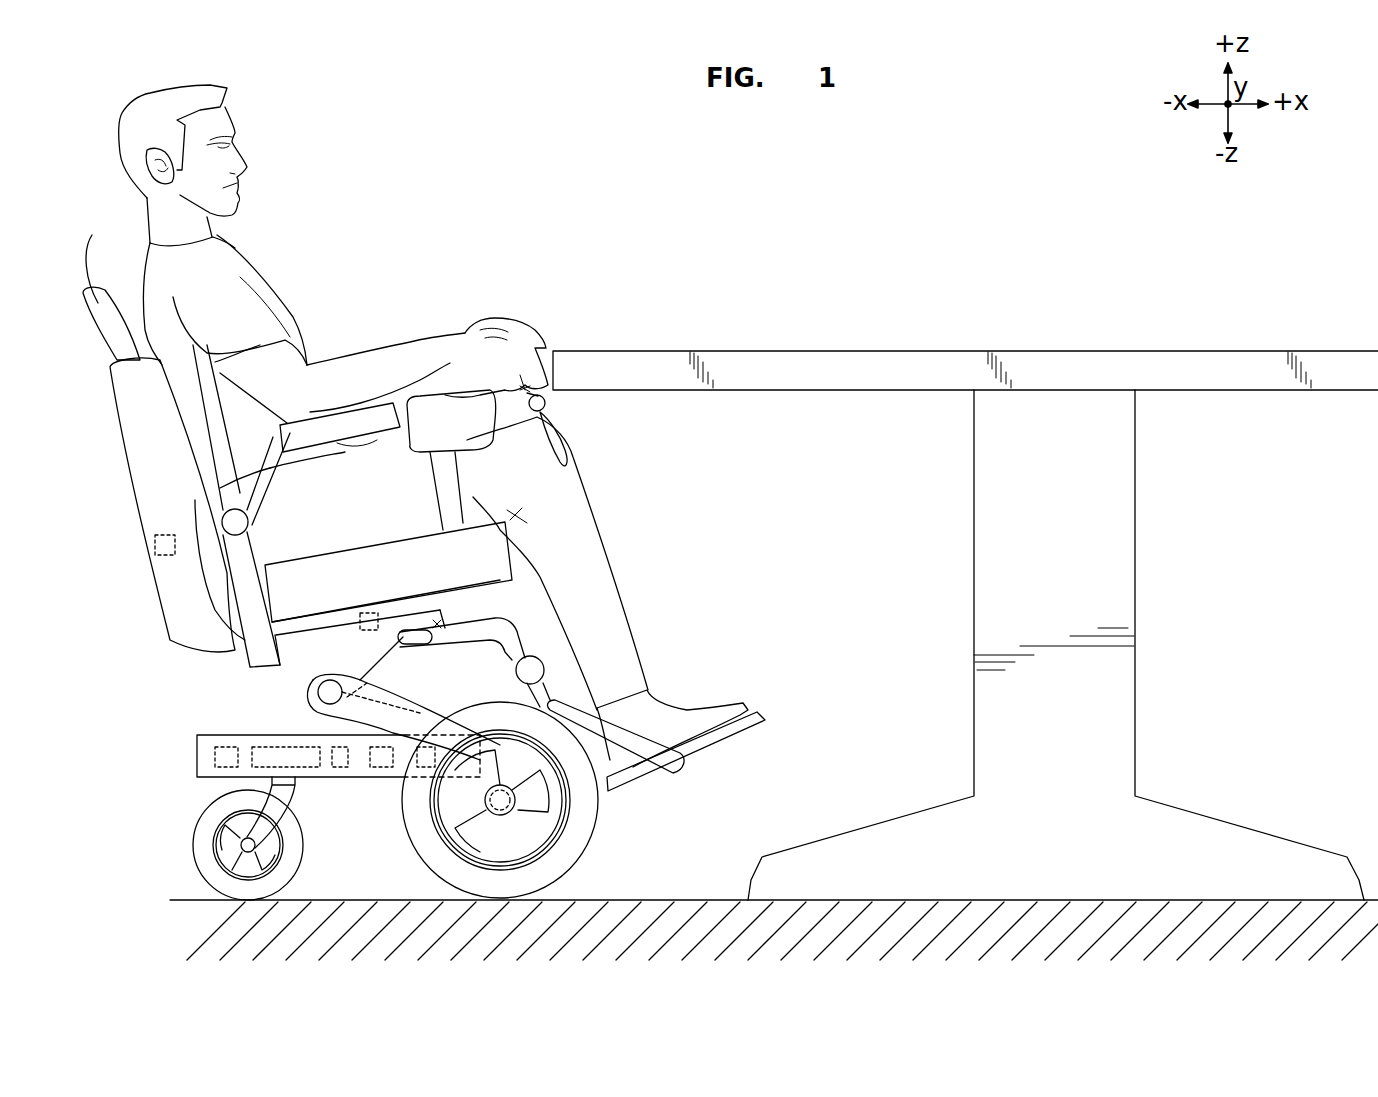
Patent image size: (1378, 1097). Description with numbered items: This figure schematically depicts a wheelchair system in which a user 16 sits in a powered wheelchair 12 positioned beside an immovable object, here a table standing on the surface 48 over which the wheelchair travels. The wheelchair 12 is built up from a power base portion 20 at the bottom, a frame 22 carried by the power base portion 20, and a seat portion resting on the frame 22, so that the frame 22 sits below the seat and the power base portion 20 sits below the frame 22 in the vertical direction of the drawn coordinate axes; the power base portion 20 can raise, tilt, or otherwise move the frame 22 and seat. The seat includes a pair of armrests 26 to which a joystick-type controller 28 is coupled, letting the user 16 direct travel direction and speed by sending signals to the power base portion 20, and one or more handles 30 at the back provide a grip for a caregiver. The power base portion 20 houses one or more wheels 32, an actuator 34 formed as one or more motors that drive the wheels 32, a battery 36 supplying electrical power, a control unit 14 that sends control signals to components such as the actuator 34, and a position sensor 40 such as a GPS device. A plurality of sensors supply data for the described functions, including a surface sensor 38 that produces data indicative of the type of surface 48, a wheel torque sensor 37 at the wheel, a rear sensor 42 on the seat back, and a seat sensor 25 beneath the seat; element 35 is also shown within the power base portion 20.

The wheelchair 12 is at (112, 440).
The control unit 14 is at (222, 773).
The user 16 is at (250, 270).
The power base portion 20 is at (310, 633).
The frame 22 is at (510, 520).
The seat sensor 25 is at (385, 615).
The armrests 26 is at (548, 395).
The controller 28 is at (560, 445).
The handles 30 is at (103, 300).
The wheels 32 is at (280, 880).
The actuator 34 is at (380, 770).
The motor 35 is at (425, 770).
The battery 36 is at (305, 770).
The wheel torque sensor 37 is at (510, 808).
The surface sensor 38 is at (437, 628).
The position sensor 40 is at (520, 652).
The rear sensor 42 is at (165, 556).
The surface 48 is at (657, 895).